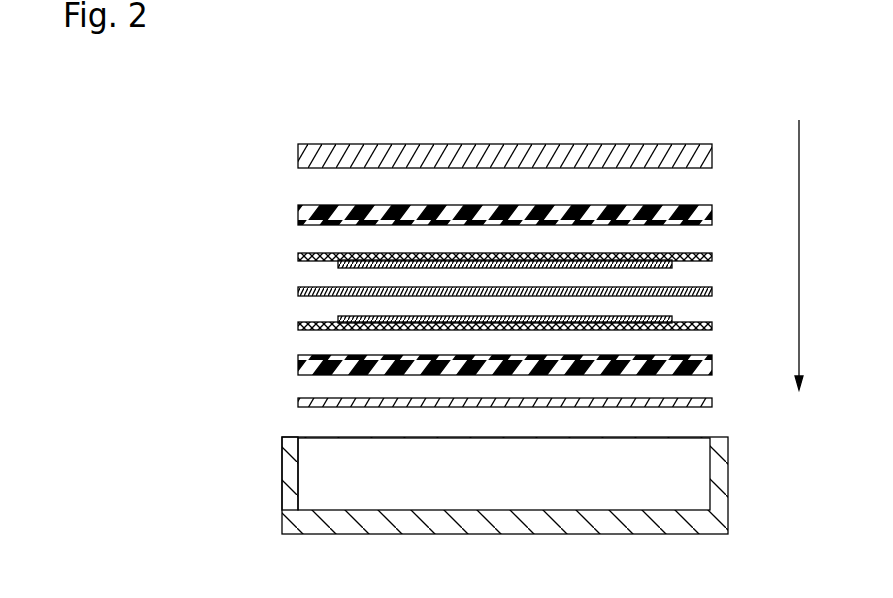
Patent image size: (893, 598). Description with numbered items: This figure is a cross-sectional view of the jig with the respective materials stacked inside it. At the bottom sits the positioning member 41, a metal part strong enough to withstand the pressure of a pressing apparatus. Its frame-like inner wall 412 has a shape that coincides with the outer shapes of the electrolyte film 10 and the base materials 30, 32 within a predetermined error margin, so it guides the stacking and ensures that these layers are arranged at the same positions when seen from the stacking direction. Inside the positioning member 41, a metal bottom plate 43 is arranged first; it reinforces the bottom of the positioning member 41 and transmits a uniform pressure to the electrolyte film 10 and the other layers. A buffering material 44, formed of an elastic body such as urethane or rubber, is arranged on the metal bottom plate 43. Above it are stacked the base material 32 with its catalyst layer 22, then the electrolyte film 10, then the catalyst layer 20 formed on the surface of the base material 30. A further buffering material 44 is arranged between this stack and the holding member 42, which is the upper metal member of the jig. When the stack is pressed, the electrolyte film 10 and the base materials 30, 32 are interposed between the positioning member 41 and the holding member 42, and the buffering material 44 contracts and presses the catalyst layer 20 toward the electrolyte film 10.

The holding member 42 is at (712, 157).
The buffering material 44 is at (712, 214).
The base material 30 is at (712, 256).
The catalyst layer 20 is at (340, 262).
The electrolyte film 10 is at (712, 291).
The catalyst layer 22 is at (340, 320).
The base material 32 is at (712, 326).
The metal bottom plate 43 is at (712, 402).
The positioning member 41 is at (728, 487).
The inner wall 412 is at (298, 480).